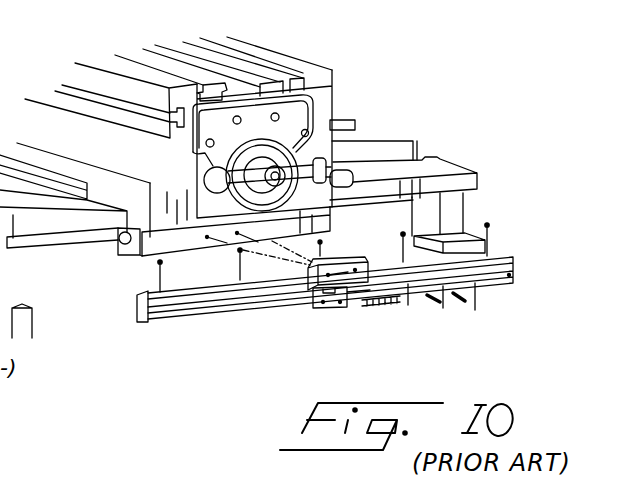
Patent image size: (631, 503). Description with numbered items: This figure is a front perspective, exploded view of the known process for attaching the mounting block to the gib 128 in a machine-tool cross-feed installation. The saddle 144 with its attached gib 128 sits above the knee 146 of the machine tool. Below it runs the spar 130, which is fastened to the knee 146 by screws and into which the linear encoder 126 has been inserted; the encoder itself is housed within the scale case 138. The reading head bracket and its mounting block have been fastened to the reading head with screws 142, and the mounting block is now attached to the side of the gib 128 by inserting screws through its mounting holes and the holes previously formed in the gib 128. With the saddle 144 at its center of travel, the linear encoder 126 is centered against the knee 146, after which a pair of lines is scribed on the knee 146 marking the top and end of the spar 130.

The linear encoder 126 is at (498, 280).
The gib 128 is at (324, 219).
The spar 130 is at (145, 292).
The scale case 138 is at (235, 313).
The screws 142 is at (333, 309).
The saddle 144 is at (157, 172).
The knee 146 is at (206, 277).